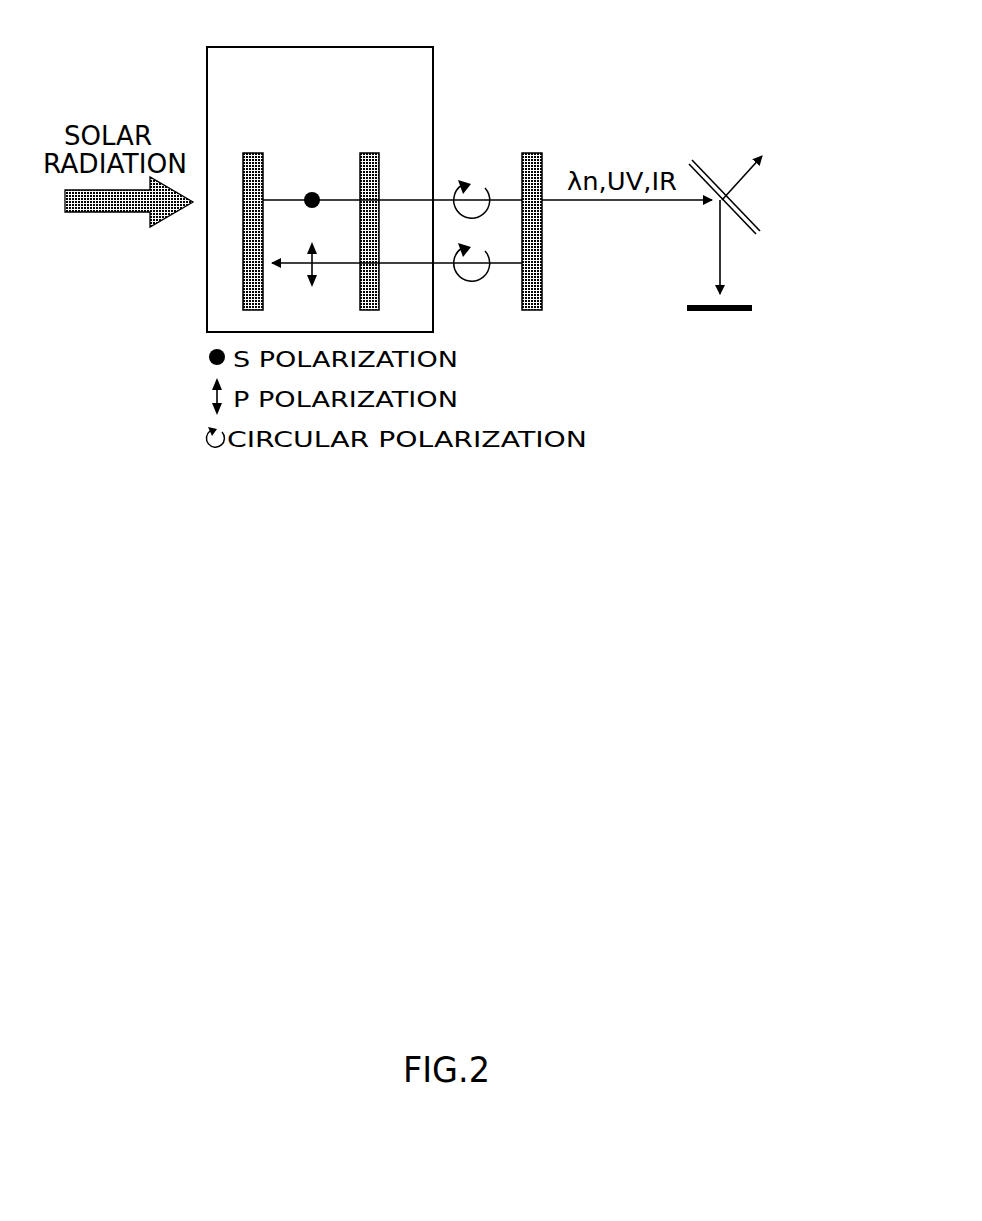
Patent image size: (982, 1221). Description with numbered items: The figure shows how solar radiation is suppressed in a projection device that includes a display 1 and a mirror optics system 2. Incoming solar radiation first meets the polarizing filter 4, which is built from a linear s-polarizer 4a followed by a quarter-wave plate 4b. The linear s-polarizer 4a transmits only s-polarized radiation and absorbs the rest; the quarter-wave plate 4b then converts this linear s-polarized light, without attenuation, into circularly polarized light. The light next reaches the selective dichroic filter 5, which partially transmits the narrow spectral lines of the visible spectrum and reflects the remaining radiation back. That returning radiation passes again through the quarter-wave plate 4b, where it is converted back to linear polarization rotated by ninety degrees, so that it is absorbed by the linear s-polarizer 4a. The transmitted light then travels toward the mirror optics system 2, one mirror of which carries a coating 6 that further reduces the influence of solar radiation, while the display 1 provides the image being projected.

The display 1 is at (723, 343).
The mirror optics system 2 is at (777, 257).
The polarizing filter 4 is at (203, 333).
The linear s-polarizer 4a is at (250, 219).
The quarter-wave plate 4b is at (370, 219).
The selective dichroic filter 5 is at (533, 150).
The coating 6 is at (703, 172).